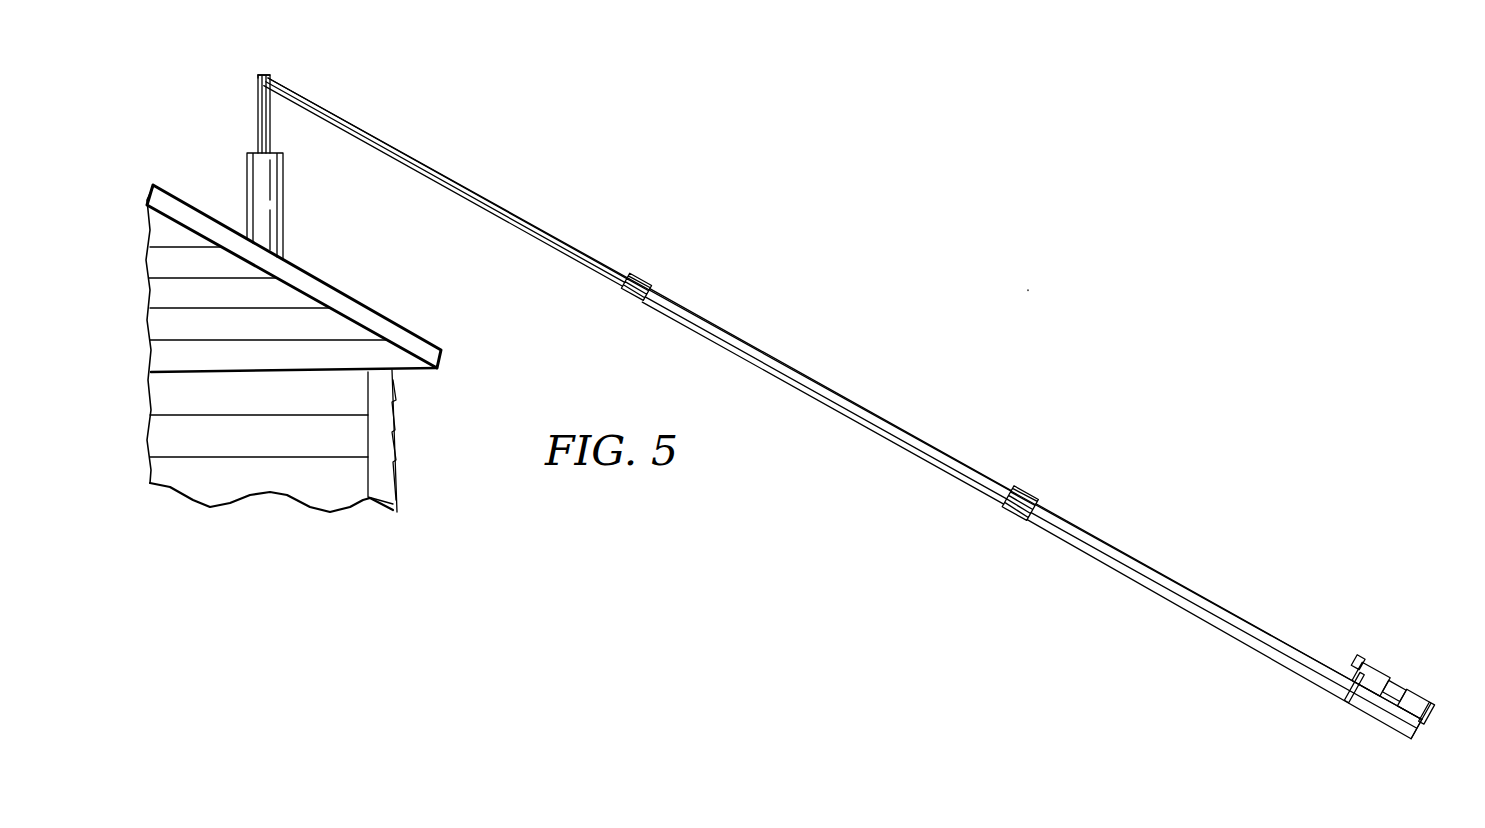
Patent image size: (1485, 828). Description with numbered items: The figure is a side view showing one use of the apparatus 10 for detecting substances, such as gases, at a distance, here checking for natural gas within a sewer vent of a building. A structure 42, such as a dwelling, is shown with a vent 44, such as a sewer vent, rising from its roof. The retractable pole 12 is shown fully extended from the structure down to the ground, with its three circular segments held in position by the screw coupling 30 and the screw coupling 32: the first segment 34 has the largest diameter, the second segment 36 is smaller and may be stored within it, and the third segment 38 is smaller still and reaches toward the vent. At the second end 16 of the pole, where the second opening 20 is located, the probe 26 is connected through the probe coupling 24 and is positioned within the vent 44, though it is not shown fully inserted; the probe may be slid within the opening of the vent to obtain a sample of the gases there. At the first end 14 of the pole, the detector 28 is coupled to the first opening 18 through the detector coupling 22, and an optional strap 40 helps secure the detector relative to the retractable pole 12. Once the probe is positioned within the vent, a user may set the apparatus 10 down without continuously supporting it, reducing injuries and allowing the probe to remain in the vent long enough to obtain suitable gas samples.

The apparatus 10 is at (1028, 290).
The retractable pole 12 is at (887, 420).
The first end 14 is at (1418, 740).
The second end 16 is at (866, 412).
The first opening 18 is at (1426, 717).
The second opening 20 is at (268, 73).
The detector coupling 22 is at (1410, 684).
The probe coupling 24 is at (248, 72).
The probe 26 is at (271, 128).
The detector 28 is at (1376, 662).
The screw coupling 30 is at (1019, 490).
The screw coupling 32 is at (637, 276).
The first segment 34 is at (1227, 612).
The second segment 36 is at (772, 354).
The third segment 38 is at (452, 176).
The strap 40 is at (1352, 686).
The structure 42 is at (376, 305).
The vent 44 is at (285, 216).